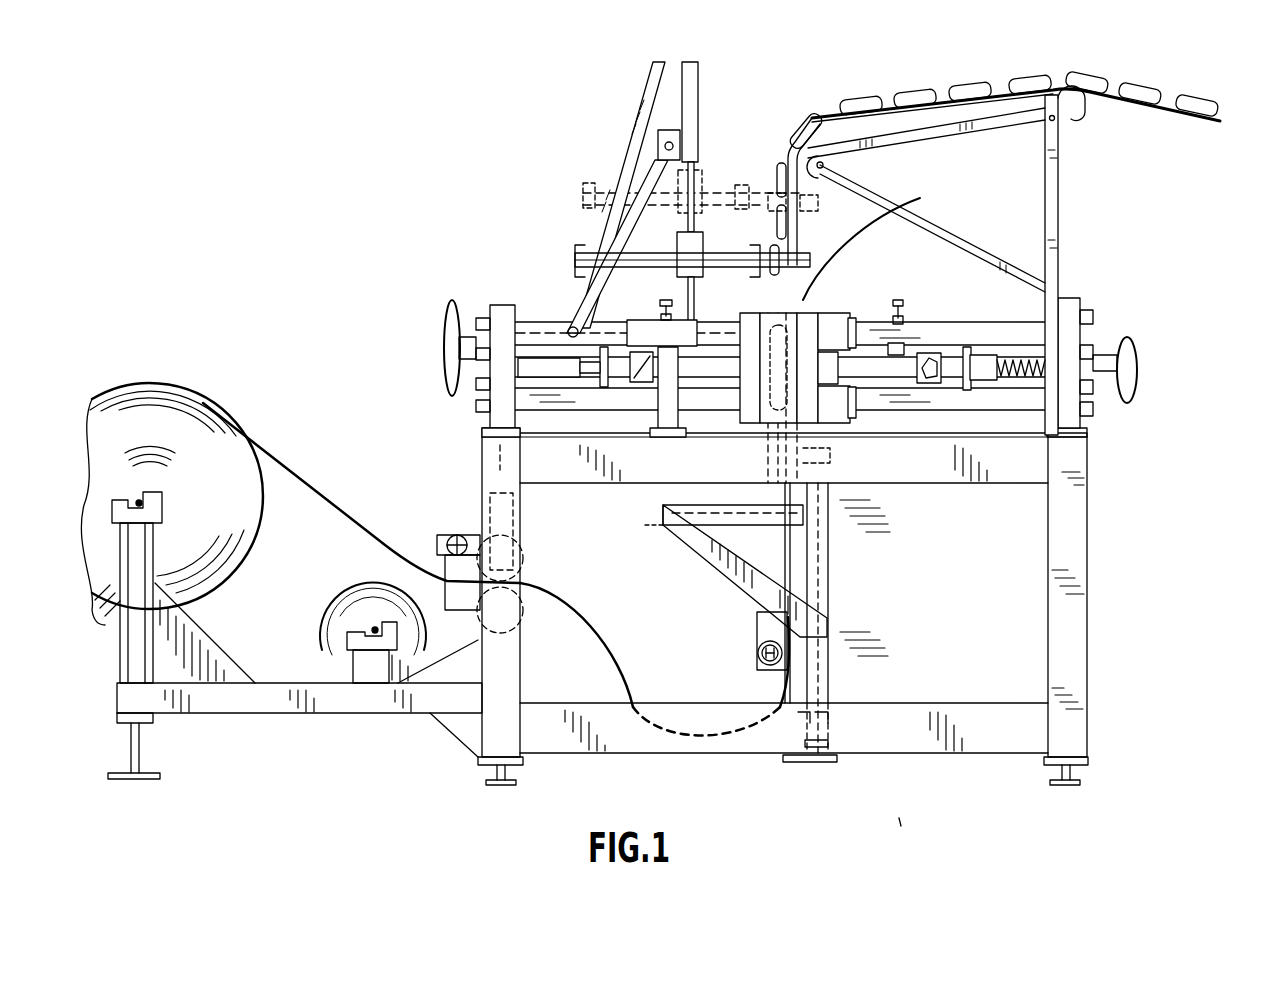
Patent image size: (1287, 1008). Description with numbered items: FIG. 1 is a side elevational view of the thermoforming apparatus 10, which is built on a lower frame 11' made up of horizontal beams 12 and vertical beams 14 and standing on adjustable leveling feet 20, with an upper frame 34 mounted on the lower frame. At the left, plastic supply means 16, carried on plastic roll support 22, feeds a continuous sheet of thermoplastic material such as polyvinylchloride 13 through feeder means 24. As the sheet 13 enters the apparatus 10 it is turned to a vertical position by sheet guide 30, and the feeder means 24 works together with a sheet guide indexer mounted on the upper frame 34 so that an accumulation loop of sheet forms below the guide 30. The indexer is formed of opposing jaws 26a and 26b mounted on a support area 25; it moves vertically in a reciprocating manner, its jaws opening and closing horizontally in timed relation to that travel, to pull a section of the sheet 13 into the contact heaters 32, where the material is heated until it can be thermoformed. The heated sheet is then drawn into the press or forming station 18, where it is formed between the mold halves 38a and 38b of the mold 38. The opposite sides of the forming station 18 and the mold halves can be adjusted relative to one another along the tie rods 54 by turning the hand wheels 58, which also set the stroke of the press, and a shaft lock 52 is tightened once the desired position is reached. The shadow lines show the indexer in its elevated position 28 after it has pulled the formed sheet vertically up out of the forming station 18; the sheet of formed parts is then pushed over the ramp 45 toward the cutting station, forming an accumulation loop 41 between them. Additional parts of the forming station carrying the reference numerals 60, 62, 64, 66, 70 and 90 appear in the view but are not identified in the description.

The thermoforming apparatus 10 is at (1104, 568).
The lower frame 11' is at (1107, 434).
The horizontal beams 12 is at (968, 485).
The plastic sheet 13 is at (300, 478).
The vertical beams 14 is at (1088, 518).
The plastic supply means 16 is at (205, 402).
The forming station 18 is at (835, 312).
The adjustable leveling feet 20 is at (150, 775).
The plastic roll support 22 is at (118, 655).
The feeder means 24 is at (525, 580).
The support area 25 is at (715, 262).
The jaw 26a is at (915, 217).
The jaw 26b is at (757, 272).
The elevated position of sheet guide indexer 28 is at (860, 180).
The sheet guide 30 is at (758, 660).
The contact heaters 32 is at (750, 550).
The upper frame 34 is at (1092, 318).
The mold 38 is at (800, 312).
The mold half 38a is at (762, 437).
The mold half 38b is at (840, 437).
The accumulation loop 41 is at (825, 122).
The ramp 45 is at (950, 105).
The shaft lock 52 is at (1050, 300).
The tie rods 54 is at (988, 330).
The hand wheels 58 is at (470, 310).
The left end plate 60 is at (530, 316).
The actuator cylinder 62 is at (560, 350).
The pivot arm 64 is at (578, 328).
The cylinder support 66 is at (650, 320).
The nut block 70 is at (852, 330).
The lock knob 90 is at (900, 300).